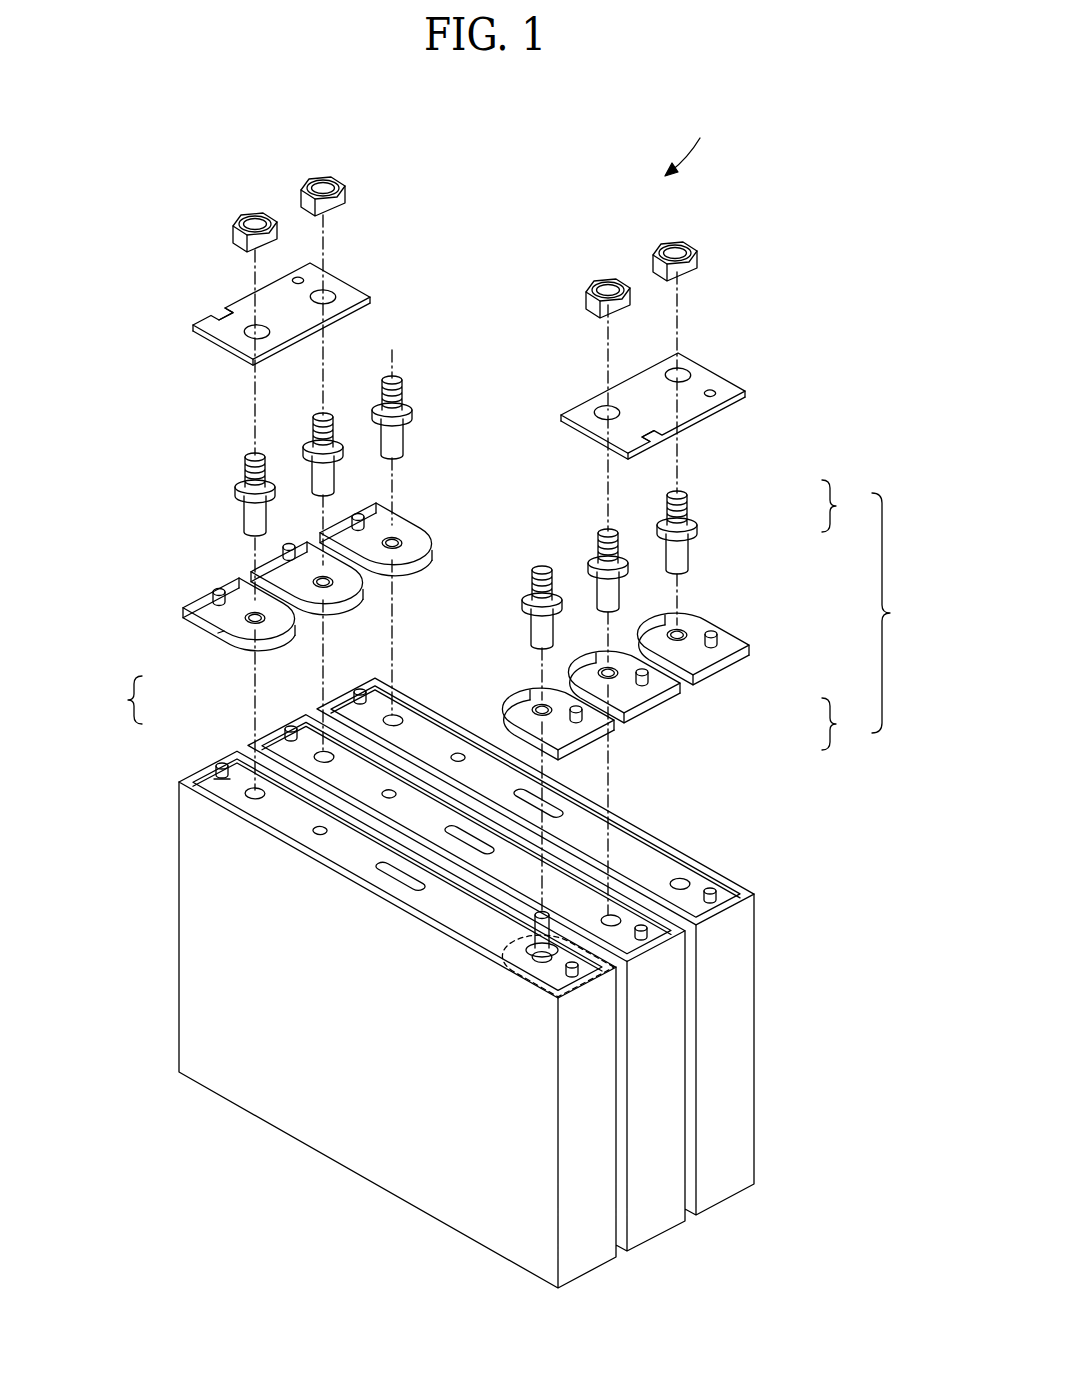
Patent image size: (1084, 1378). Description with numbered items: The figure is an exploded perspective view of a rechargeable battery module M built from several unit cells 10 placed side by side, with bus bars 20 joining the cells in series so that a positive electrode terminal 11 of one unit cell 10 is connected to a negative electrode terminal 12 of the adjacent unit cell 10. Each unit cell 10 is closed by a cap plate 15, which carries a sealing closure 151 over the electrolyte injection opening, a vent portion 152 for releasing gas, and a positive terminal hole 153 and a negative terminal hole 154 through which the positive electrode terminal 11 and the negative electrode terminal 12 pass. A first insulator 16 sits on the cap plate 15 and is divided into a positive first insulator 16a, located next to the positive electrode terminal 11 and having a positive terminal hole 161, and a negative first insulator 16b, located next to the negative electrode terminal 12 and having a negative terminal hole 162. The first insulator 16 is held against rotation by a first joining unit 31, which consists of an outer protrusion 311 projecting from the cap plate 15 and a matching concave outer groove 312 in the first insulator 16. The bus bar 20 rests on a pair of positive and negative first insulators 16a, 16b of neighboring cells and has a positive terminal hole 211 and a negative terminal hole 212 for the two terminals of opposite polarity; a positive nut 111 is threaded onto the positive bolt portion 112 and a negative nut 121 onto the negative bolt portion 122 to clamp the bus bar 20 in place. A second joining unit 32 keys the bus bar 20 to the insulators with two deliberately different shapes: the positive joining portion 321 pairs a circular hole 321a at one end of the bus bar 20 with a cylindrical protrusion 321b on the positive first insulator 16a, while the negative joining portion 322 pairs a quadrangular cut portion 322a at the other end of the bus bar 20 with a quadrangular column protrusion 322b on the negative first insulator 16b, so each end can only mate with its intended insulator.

The rechargeable battery module M is at (692, 138).
The unit cell 10 is at (478, 991).
The positive electrode terminal 11 is at (515, 499).
The negative electrode terminal 12 is at (404, 468).
The cap plate 15 is at (462, 864).
The first insulator 16 is at (614, 740).
The positive first insulator 16a is at (345, 583).
The negative first insulator 16b is at (196, 612).
The bus bar 20 is at (487, 343).
The first joining unit 31 is at (165, 705).
The second joining unit 32 is at (504, 500).
The positive nut 111 is at (313, 179).
The positive bolt portion 112 is at (336, 447).
The negative nut 121 is at (247, 218).
The negative bolt portion 122 is at (246, 487).
The sealing closure 151 is at (315, 843).
The vent portion 152 is at (405, 888).
The positive terminal hole 153 is at (243, 805).
The negative terminal hole 154 is at (335, 764).
The positive terminal hole 161 is at (328, 590).
The negative terminal hole 162 is at (262, 622).
The positive terminal hole 211 is at (683, 370).
The negative terminal hole 212 is at (598, 410).
The outer protrusion 311 is at (220, 772).
The outer groove 312 is at (218, 633).
The positive joining portion 321 is at (503, 447).
The circular hole 321a is at (288, 277).
The cylindrical protrusion 321b is at (286, 560).
The negative joining portion 322 is at (479, 521).
The quadrangular cut portion 322a is at (219, 312).
The quadrangular column protrusion 322b is at (212, 600).